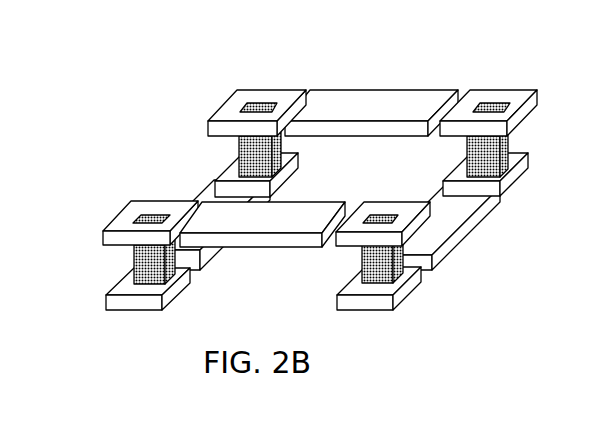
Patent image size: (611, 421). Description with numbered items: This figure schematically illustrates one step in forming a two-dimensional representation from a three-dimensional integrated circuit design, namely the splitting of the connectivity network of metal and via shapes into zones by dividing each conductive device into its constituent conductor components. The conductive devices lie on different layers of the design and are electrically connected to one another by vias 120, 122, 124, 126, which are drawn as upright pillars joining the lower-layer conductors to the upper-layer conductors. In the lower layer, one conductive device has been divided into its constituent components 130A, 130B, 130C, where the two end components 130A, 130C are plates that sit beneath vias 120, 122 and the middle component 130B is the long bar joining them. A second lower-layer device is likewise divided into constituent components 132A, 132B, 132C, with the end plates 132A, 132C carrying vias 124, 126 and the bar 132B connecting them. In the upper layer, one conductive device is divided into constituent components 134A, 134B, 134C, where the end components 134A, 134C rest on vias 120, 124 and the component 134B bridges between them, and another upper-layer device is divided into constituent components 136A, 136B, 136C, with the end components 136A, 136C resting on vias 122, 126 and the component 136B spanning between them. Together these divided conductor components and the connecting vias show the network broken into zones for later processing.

The via 120 is at (240, 146).
The via 122 is at (133, 260).
The via 124 is at (508, 142).
The via 126 is at (431, 257).
The constituent component 130A is at (218, 177).
The constituent component 130B is at (208, 195).
The constituent component 130C is at (108, 296).
The constituent component 132A is at (523, 173).
The constituent component 132B is at (480, 223).
The constituent component 132C is at (397, 303).
The constituent component 134A is at (272, 90).
The constituent component 134B is at (383, 90).
The constituent component 134C is at (503, 90).
The constituent component 136A is at (123, 215).
The constituent component 136B is at (233, 250).
The constituent component 136C is at (343, 248).